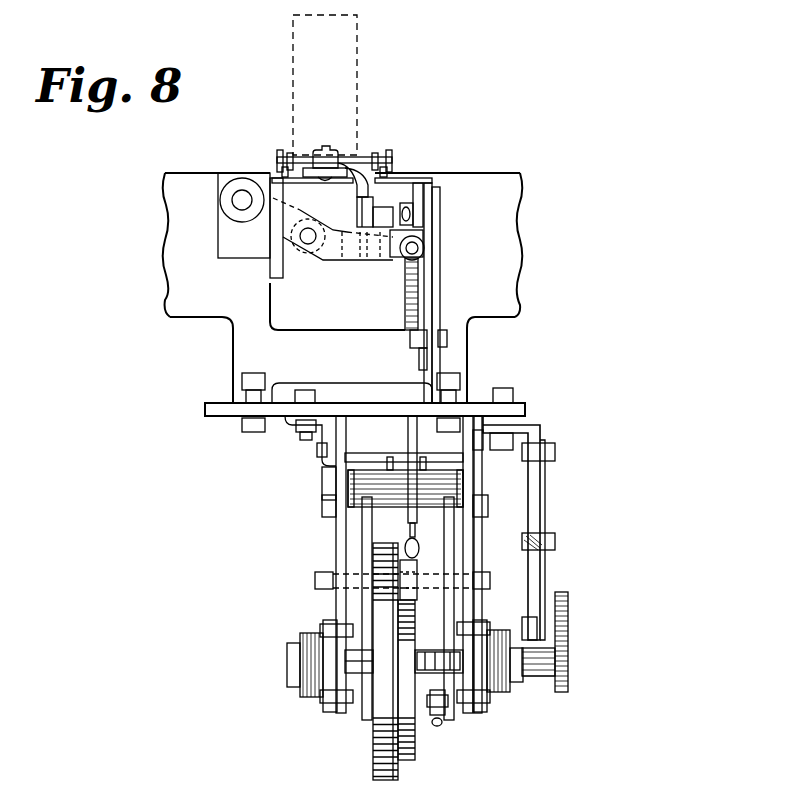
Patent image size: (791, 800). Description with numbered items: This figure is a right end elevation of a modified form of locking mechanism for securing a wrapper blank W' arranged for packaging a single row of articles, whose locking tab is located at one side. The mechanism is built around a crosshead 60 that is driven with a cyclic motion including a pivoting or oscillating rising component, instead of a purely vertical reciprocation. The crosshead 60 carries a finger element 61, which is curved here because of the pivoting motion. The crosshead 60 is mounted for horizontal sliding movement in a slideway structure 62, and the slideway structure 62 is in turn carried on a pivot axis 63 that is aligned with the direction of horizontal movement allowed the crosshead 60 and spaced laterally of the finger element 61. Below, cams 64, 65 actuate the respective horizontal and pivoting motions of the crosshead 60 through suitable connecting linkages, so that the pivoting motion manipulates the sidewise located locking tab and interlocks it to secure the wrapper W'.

The crosshead 60 is at (373, 203).
The finger element 61 is at (355, 157).
The slideway structure 62 is at (324, 262).
The pivot axis 63 is at (238, 200).
The cam 64 is at (373, 740).
The cam 65 is at (418, 745).
The wrapper blank W' is at (356, 85).